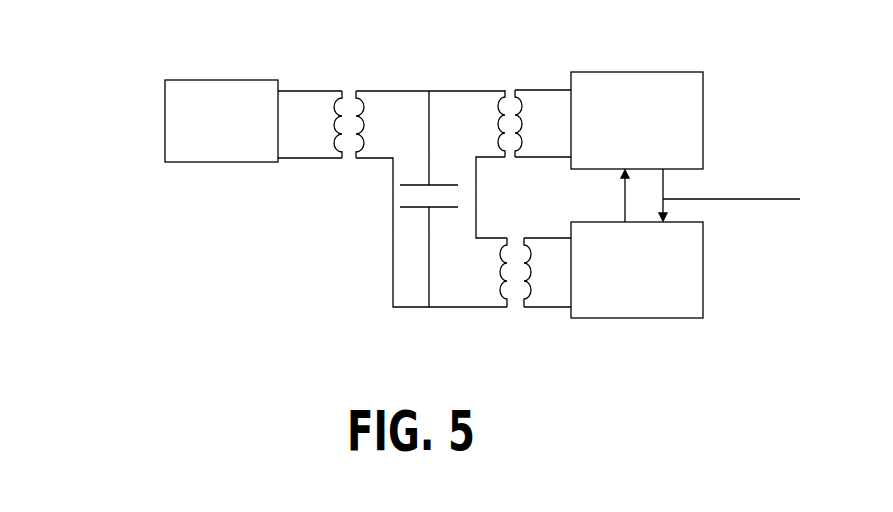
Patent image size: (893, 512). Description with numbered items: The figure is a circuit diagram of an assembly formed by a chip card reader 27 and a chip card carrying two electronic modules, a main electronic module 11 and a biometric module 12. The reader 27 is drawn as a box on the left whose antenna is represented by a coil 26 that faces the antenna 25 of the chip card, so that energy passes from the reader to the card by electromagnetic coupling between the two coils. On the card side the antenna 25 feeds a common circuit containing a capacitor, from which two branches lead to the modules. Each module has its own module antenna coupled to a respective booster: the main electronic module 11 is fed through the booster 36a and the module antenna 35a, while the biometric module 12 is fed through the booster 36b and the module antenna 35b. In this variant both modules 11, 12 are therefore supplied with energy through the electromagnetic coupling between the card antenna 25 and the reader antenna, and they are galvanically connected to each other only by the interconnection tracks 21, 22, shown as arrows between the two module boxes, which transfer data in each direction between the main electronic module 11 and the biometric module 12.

The chip card reader 27 is at (175, 123).
The primary coil 26 is at (338, 92).
The antenna of the chip card 25 is at (357, 97).
The booster 36a is at (505, 100).
The module antenna 35a is at (514, 97).
The booster 36b is at (503, 272).
The module antenna 35b is at (523, 288).
The main electronic module 11 is at (688, 132).
The biometric module 12 is at (678, 285).
The interconnection track 22 is at (627, 188).
The interconnection track 21 is at (750, 195).